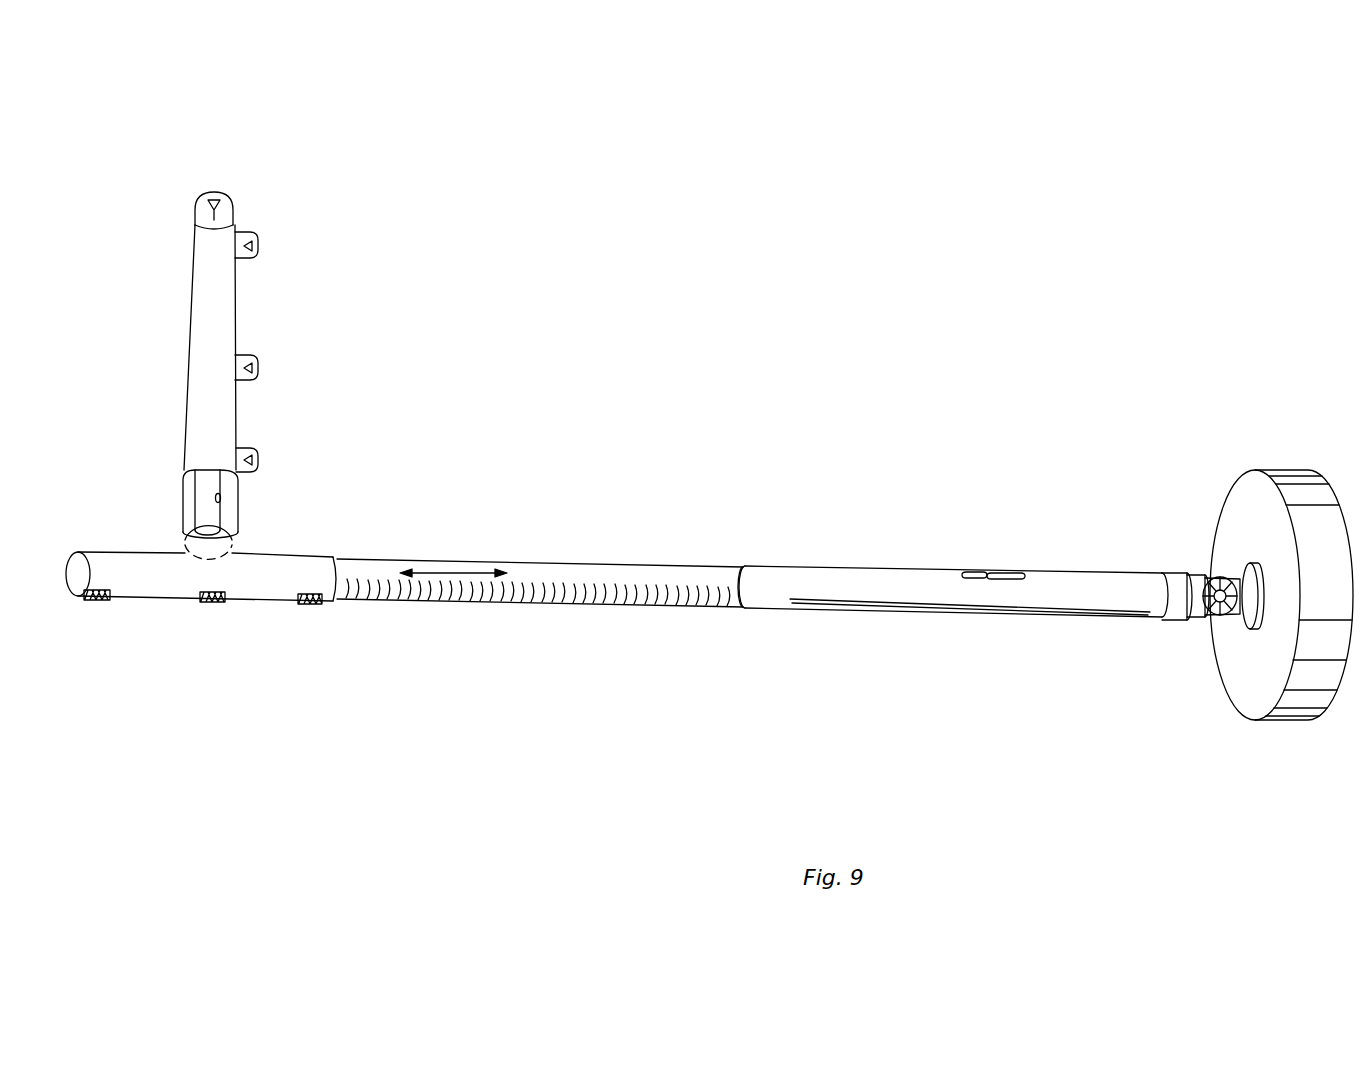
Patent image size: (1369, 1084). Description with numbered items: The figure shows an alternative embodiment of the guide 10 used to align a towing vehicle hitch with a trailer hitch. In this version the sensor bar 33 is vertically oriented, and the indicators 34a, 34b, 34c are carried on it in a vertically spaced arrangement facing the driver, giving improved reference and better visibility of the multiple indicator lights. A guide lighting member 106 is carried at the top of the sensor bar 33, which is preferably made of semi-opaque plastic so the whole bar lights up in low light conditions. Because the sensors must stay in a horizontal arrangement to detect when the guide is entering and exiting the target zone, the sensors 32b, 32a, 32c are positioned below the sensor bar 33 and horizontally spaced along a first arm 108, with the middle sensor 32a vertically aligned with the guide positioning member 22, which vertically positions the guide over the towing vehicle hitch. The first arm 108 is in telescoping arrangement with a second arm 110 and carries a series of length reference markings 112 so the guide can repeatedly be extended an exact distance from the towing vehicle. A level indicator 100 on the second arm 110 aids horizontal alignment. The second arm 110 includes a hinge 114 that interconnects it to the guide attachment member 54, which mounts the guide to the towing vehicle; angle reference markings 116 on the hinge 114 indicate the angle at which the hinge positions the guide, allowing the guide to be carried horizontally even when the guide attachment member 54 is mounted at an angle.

The guide 10 is at (696, 486).
The guide positioning member 22 is at (200, 508).
The sensor bar 33 is at (205, 300).
The second indicator 34a is at (258, 368).
The first indicator 34b is at (258, 462).
The third indicator 34c is at (258, 240).
The second sensor 32a is at (212, 607).
The first sensor 32b is at (96, 604).
The third sensor 32c is at (313, 609).
The guide attachment member 54 is at (1298, 473).
The level indicator 100 is at (1005, 574).
The guide lighting member 106 is at (215, 192).
The first arm 108 is at (602, 564).
The second arm 110 is at (868, 568).
The length reference markings 112 is at (588, 610).
The hinge 114 is at (1190, 622).
The angle reference markings 116 is at (1210, 579).